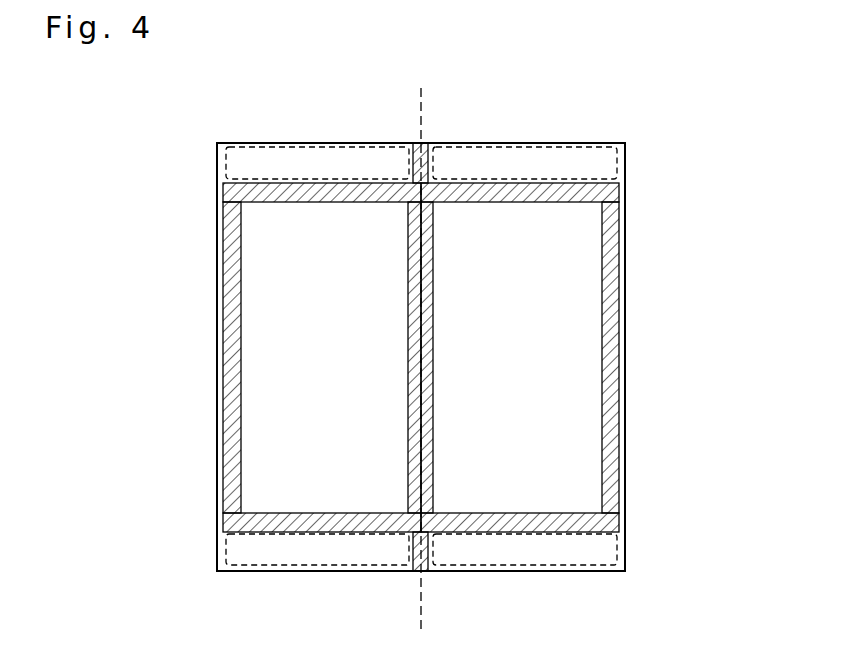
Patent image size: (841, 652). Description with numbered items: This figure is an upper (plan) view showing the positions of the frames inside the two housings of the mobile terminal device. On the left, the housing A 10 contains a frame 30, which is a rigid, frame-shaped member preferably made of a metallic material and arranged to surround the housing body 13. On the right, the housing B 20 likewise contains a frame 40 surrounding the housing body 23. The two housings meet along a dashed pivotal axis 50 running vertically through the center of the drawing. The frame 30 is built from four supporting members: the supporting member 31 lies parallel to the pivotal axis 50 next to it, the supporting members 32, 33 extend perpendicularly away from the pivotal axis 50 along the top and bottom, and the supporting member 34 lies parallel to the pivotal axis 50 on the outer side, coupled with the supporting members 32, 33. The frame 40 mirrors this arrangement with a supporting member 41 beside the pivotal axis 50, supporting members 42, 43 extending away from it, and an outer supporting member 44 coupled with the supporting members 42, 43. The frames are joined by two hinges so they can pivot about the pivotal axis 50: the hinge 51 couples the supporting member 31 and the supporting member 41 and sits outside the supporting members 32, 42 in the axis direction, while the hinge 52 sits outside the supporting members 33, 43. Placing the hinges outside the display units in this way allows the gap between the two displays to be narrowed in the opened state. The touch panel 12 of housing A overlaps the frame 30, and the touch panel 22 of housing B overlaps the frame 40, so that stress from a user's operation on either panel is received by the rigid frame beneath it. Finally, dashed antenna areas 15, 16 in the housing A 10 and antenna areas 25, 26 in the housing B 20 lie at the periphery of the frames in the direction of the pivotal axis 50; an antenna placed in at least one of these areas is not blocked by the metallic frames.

The housing A 10 is at (268, 309).
The touch panel 12 is at (275, 357).
The housing body 13 is at (217, 218).
The antenna area 15 is at (226, 150).
The antenna area 16 is at (226, 543).
The housing B 20 is at (574, 309).
The touch panel 22 is at (567, 357).
The housing body 23 is at (625, 215).
The antenna area 25 is at (617, 152).
The antenna area 26 is at (617, 548).
The frame 30 is at (268, 357).
The supporting member 31 is at (408, 322).
The supporting member 32 is at (328, 203).
The supporting member 33 is at (321, 513).
The supporting member 34 is at (241, 352).
The frame 40 is at (574, 357).
The supporting member 41 is at (433, 373).
The supporting member 42 is at (517, 203).
The supporting member 43 is at (516, 513).
The supporting member 44 is at (602, 315).
The pivotal axis 50 is at (421, 600).
The hinge 51 is at (422, 143).
The hinge 52 is at (416, 572).